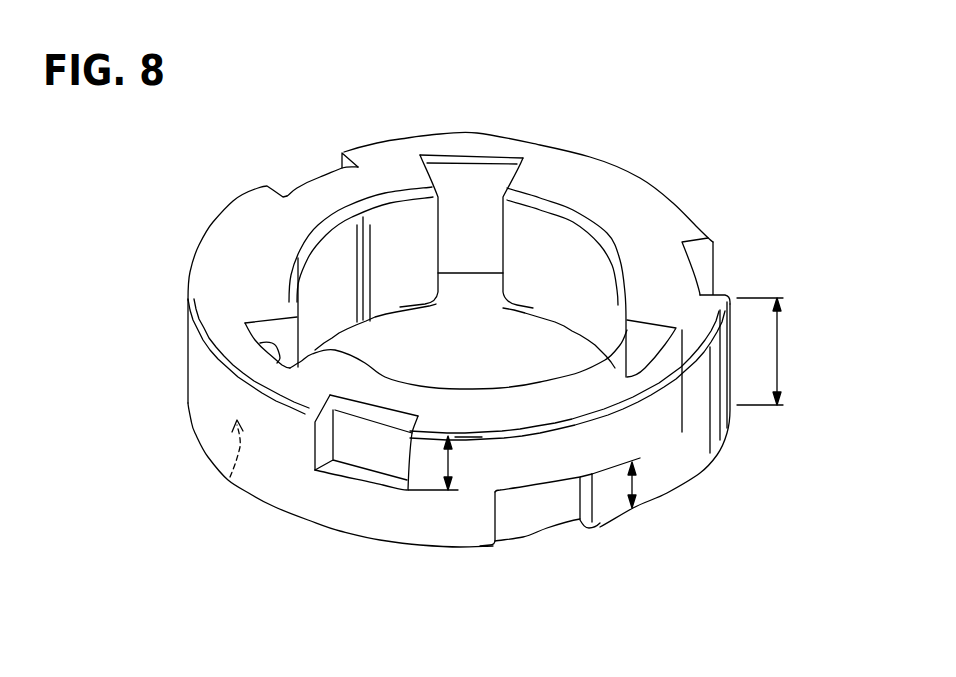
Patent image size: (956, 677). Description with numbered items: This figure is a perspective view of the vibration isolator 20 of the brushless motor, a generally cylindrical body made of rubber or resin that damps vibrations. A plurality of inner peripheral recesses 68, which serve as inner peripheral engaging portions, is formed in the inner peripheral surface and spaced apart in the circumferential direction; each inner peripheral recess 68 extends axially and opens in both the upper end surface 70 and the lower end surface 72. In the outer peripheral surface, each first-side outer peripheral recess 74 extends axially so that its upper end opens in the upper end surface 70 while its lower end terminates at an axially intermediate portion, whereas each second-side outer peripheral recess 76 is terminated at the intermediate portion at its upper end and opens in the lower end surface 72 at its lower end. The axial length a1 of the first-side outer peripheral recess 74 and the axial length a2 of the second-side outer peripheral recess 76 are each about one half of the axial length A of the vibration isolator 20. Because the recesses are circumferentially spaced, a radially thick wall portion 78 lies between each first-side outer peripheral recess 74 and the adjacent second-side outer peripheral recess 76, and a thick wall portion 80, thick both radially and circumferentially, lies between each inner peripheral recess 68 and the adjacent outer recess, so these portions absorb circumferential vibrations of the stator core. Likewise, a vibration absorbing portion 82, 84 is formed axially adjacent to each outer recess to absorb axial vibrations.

The vibration isolator 20 is at (496, 102).
The upper end surface 70 is at (237, 248).
The inner peripheral recess 68 is at (287, 370).
The lower end surface 72 is at (230, 477).
The thick wall portion 80 is at (292, 440).
The vibration absorbing portion 82 is at (335, 500).
The first-side outer peripheral recess 74 is at (407, 458).
The thick wall portion 78 is at (432, 517).
The second-side outer peripheral recess 76 is at (497, 513).
The vibration absorbing portion 84 is at (533, 468).
The axial length of first-side outer peripheral recess a1 is at (450, 452).
The axial length of second-side outer peripheral recess a2 is at (633, 487).
The axial length of vibration isolator A is at (779, 350).